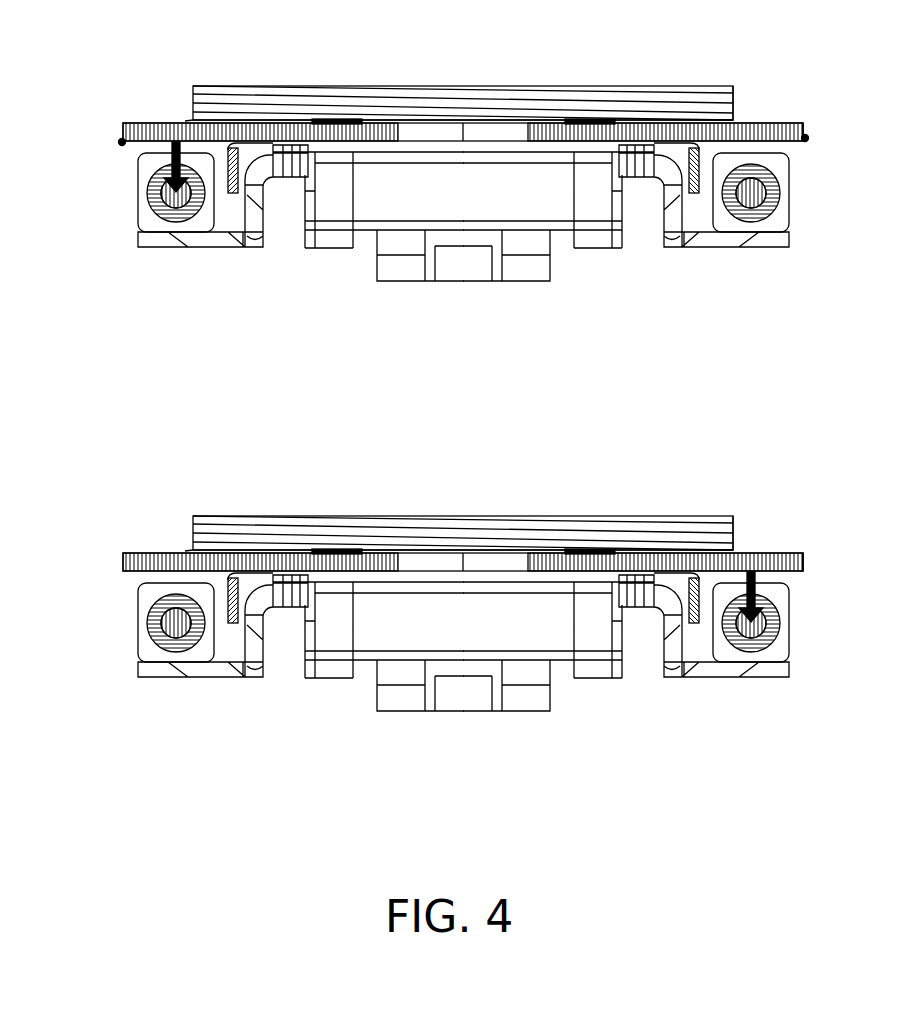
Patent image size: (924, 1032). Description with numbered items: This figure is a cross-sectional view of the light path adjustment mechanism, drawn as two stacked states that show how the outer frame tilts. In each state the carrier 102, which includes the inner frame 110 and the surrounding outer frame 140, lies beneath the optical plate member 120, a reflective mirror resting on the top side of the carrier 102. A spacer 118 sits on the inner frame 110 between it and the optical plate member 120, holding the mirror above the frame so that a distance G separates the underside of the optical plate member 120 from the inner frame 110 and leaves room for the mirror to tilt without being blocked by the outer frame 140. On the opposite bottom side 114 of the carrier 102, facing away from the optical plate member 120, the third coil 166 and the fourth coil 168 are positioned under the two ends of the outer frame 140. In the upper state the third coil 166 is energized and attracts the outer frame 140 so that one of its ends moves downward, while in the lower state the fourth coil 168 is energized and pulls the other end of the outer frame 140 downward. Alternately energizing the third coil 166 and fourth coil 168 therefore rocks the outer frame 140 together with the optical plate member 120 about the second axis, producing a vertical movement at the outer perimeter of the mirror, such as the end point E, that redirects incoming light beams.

The carrier 102 is at (756, 115).
The inner frame 110 is at (283, 128).
The bottom side 114 is at (788, 142).
The spacer 118 is at (332, 122).
The optical plate member 120 is at (365, 102).
The outer frame 140 is at (150, 127).
The third coil 166 is at (172, 216).
The fourth coil 168 is at (753, 218).
The distance G is at (185, 121).
The end point E is at (122, 143).